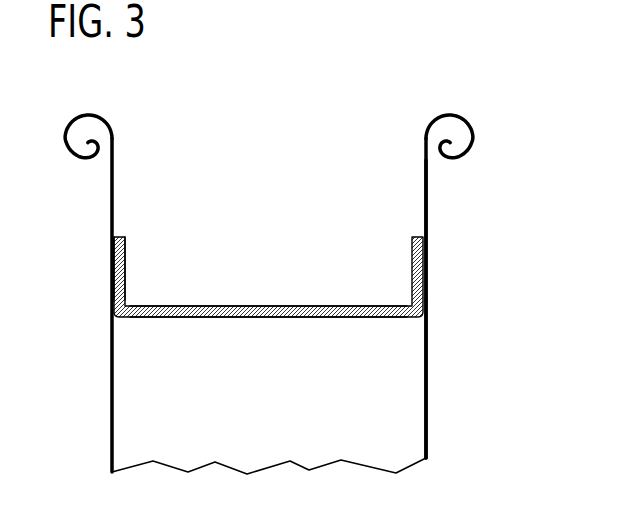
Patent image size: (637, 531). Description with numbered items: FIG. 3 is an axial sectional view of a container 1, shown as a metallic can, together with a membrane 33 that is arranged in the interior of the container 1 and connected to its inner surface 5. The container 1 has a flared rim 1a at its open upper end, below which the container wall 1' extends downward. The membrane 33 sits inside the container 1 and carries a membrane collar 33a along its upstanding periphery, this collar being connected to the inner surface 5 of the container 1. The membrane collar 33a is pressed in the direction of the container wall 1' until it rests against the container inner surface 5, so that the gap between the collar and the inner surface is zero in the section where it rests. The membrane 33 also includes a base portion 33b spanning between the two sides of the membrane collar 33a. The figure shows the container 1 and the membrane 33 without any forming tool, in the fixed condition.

The container 1 is at (313, 307).
The flared rim 1a is at (68, 140).
The container wall 1' is at (463, 230).
The inner surface 5 is at (425, 402).
The membrane 33 is at (320, 298).
The membrane collar 33a is at (121, 266).
The base of the insert 33b is at (268, 312).